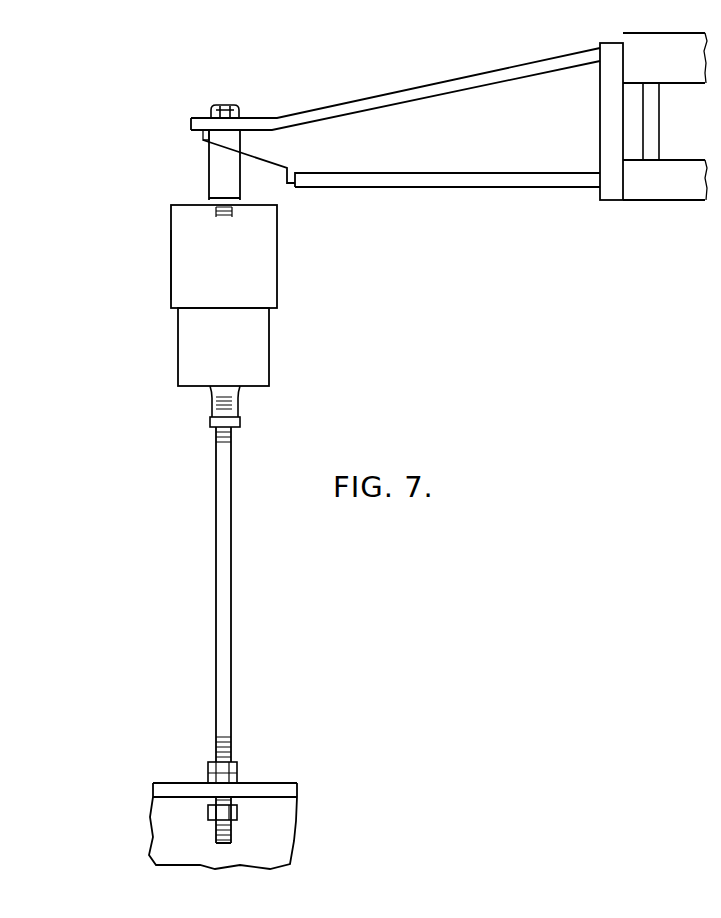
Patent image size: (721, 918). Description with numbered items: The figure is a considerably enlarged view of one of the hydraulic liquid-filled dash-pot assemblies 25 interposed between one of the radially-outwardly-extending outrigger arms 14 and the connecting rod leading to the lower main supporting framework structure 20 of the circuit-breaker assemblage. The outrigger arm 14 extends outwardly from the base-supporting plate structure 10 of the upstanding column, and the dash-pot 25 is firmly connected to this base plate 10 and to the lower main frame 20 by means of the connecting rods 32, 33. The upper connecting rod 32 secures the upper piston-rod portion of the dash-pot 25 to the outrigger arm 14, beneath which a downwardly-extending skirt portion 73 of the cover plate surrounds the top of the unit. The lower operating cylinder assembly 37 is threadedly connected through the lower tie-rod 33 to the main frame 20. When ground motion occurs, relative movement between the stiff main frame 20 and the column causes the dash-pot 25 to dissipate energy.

The base-supporting plate structure 10 is at (651, 33).
The outrigger arm 14 is at (446, 80).
The connecting rod 32 is at (209, 163).
The dash-pot 25 is at (268, 262).
The skirt portion 73 is at (171, 240).
The operating cylinder assembly 37 is at (178, 340).
The lower tie-rod 33 is at (219, 575).
The main supporting framework structure 20 is at (258, 788).